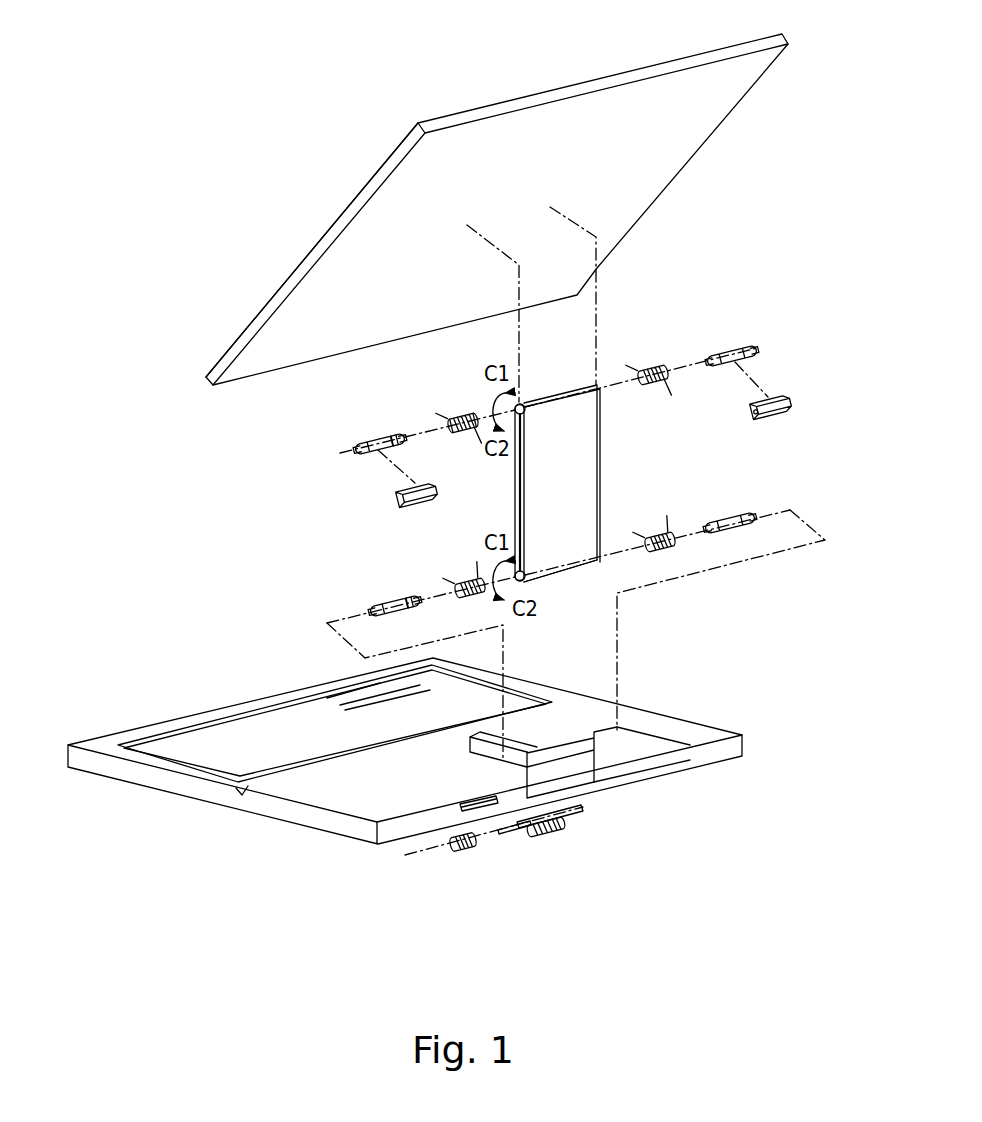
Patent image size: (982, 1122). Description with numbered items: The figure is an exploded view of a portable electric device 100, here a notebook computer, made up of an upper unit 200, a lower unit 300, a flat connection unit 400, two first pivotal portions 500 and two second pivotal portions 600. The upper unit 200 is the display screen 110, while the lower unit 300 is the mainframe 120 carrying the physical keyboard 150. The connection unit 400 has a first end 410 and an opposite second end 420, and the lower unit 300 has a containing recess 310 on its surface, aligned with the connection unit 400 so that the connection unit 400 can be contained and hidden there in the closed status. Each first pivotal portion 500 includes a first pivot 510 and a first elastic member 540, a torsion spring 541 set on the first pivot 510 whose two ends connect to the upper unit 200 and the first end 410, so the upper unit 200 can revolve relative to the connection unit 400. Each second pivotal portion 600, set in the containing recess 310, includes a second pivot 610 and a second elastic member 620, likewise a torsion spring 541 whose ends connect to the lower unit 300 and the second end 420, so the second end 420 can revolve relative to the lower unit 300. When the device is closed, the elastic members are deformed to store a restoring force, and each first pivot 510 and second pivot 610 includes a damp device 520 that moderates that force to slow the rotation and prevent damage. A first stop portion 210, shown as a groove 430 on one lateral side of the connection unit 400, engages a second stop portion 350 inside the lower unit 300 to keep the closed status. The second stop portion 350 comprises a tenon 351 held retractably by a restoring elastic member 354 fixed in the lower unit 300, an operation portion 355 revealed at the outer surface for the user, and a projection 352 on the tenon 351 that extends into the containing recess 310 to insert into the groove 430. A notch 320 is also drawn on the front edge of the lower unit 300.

The portable electric device 100 is at (140, 112).
The display screen 110 is at (340, 213).
The mainframe 120 is at (150, 720).
The physical keyboard 150 is at (263, 722).
The upper unit 200 is at (648, 217).
The first stop portion 210 is at (512, 483).
The lower unit 300 is at (414, 746).
The containing recess 310 is at (562, 786).
The notch 320 is at (238, 792).
The second stop portion 350 is at (546, 875).
The tenon 351 is at (528, 829).
The projection 352 is at (573, 818).
The restoring elastic member 354 is at (467, 853).
The operation portion 355 is at (571, 856).
The connection unit 400 is at (558, 483).
The first end 410 is at (552, 392).
The second end 420 is at (558, 574).
The groove 430 is at (518, 523).
The first pivotal portion 500 is at (561, 405).
The first pivot 510 is at (368, 429).
The damp device 520 is at (388, 430).
The first elastic member 540 is at (462, 409).
The torsion spring 541 is at (457, 443).
The second pivotal portion 600 is at (542, 550).
The second pivot 610 is at (383, 592).
The second elastic member 620 is at (458, 570).